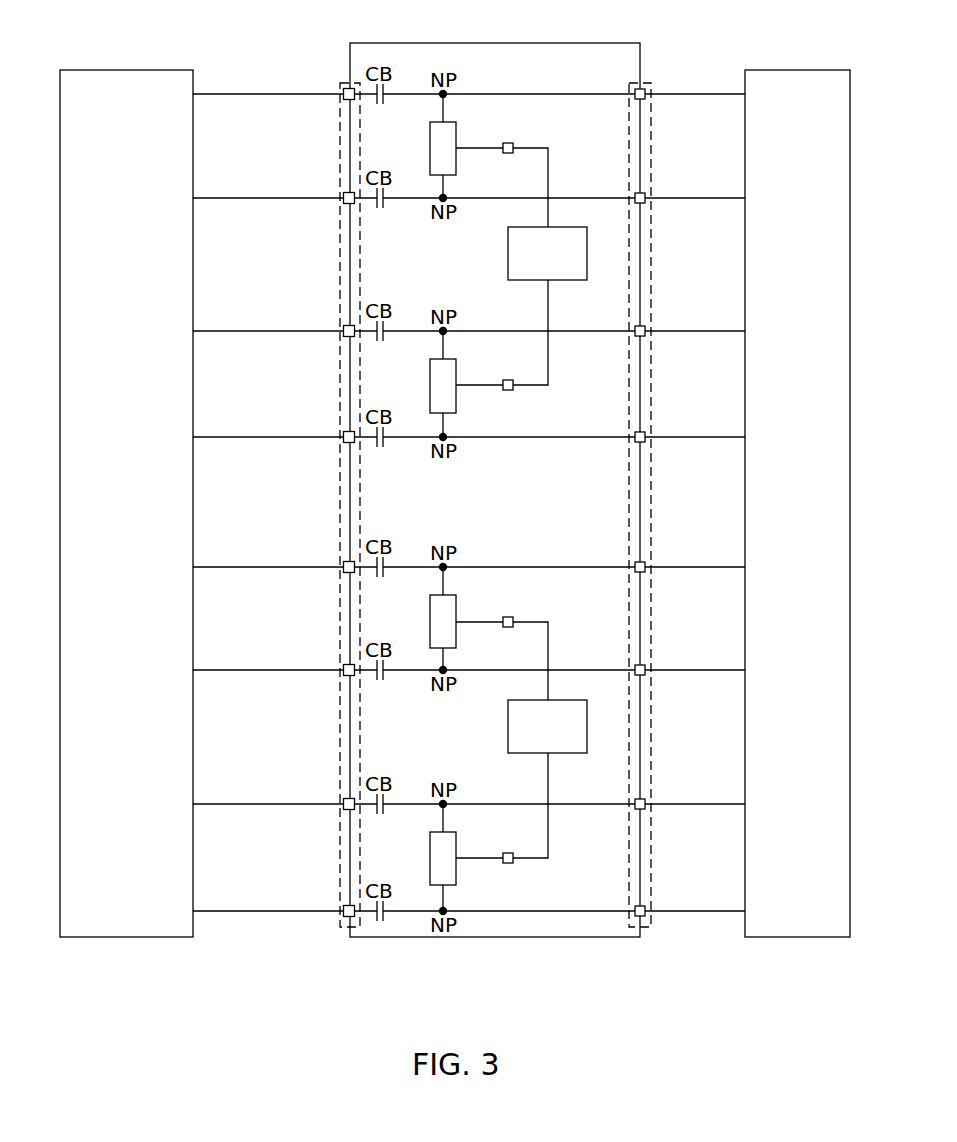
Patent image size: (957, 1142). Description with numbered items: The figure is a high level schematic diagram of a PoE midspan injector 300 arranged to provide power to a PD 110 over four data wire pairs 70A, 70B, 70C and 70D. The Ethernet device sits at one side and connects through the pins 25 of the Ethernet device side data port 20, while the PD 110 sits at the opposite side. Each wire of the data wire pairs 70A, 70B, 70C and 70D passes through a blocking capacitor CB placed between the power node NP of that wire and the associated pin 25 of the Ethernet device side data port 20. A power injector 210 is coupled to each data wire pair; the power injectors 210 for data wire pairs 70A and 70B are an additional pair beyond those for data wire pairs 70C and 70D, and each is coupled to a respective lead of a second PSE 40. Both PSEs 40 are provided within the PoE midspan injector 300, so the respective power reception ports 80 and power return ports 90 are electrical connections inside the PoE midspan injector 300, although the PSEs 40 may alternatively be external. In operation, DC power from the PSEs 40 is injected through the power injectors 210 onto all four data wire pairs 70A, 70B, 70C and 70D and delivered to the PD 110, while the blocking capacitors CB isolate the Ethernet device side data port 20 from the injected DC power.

The Ethernet device side data port 20 is at (344, 928).
The pin 25 is at (345, 88).
The PSE 40 is at (588, 252).
The data wire pair 70A is at (404, 93).
The data wire pair 70B is at (408, 333).
The data wire pair 70C is at (420, 566).
The data wire pair 70D is at (405, 806).
The power reception port 80 is at (500, 148).
The power return port 90 is at (503, 388).
The PD 110 is at (823, 940).
The power injector 210 is at (429, 163).
The PoE midspan injector 300 is at (388, 937).